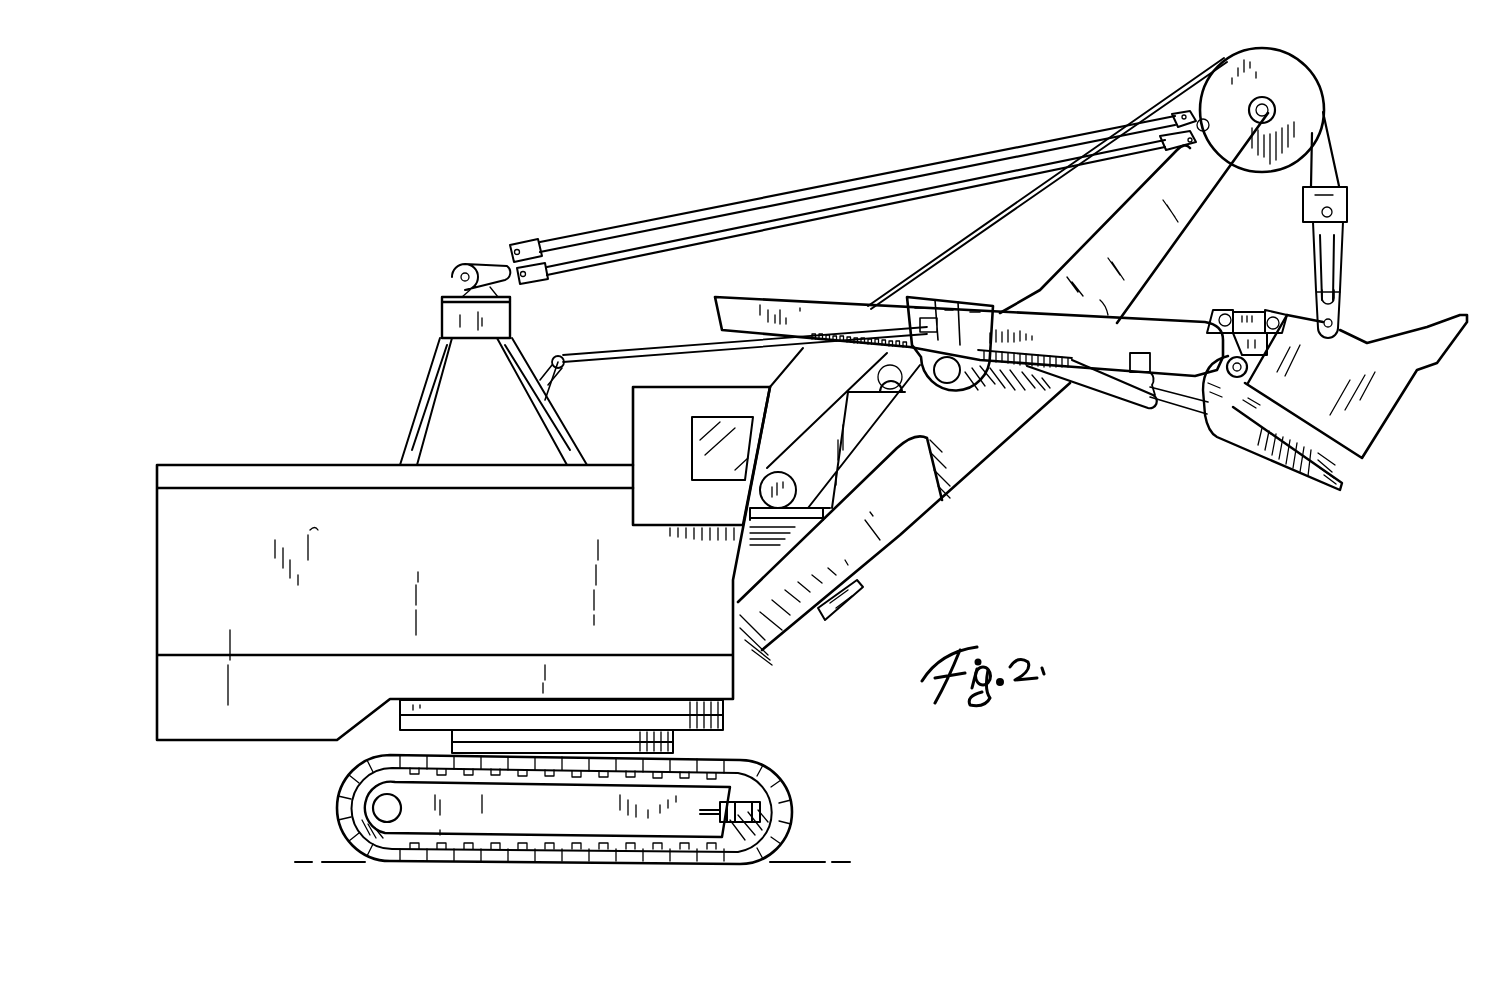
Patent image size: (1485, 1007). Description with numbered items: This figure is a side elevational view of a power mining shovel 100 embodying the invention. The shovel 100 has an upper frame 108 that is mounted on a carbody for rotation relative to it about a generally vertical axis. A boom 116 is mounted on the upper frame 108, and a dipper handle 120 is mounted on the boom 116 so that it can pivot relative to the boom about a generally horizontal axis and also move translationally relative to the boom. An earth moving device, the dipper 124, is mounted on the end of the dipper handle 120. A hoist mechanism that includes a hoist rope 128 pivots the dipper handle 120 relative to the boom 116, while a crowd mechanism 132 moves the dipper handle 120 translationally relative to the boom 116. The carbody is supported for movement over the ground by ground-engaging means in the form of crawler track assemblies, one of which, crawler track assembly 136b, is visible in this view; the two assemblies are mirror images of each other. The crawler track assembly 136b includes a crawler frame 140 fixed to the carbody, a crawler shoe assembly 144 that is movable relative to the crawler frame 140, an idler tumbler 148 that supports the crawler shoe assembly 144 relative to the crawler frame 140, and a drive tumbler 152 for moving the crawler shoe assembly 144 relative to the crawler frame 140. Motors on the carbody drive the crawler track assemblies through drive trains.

The power mining shovel 100 is at (257, 370).
The upper frame 108 is at (481, 568).
The boom 116 is at (1130, 227).
The dipper handle 120 is at (787, 310).
The dipper 124 is at (1300, 473).
The hoist rope 128 is at (960, 237).
The crowd mechanism 132 is at (968, 288).
The crawler track assembly 136b is at (767, 770).
The crawler frame 140 is at (595, 827).
The crawler shoe assembly 144 is at (583, 860).
The idler tumbler 148 is at (793, 817).
The drive tumbler 152 is at (337, 813).